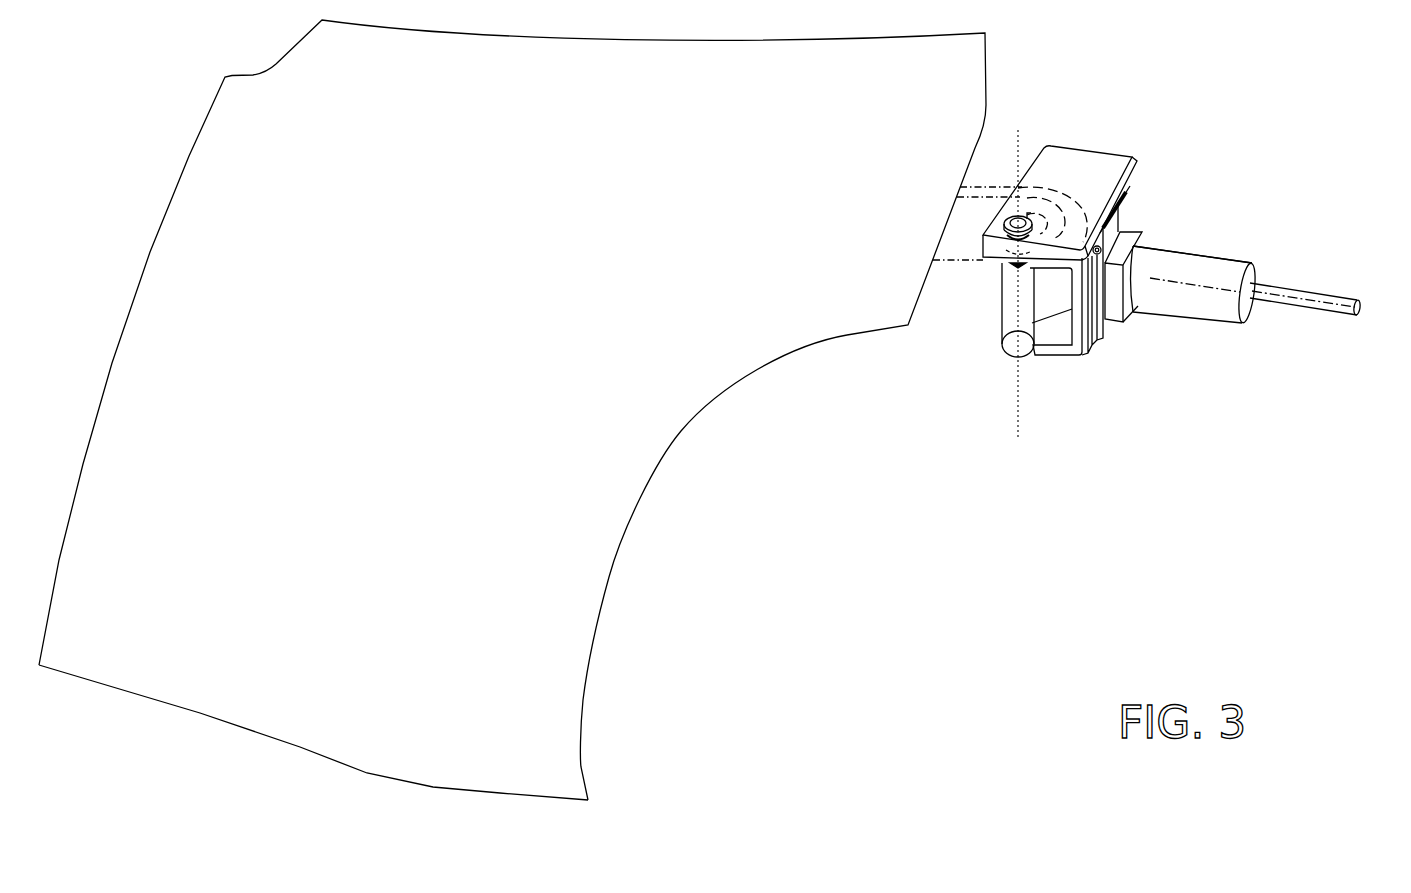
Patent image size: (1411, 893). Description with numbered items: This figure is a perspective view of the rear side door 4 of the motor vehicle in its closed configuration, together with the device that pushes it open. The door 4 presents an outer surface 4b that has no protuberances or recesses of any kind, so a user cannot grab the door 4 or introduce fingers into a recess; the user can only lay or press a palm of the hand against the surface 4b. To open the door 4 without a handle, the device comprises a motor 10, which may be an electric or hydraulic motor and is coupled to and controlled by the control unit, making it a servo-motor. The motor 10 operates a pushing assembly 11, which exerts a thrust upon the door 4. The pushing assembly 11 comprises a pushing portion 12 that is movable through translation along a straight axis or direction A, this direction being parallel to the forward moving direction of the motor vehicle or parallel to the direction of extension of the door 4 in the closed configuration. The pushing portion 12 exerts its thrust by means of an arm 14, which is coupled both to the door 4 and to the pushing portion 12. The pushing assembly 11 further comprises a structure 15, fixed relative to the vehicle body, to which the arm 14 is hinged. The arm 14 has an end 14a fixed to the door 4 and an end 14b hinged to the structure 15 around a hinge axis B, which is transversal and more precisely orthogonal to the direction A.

The rear side door 4 is at (625, 382).
The outer surface 4b is at (528, 422).
The motor 10 is at (1172, 262).
The pushing assembly 11 is at (1210, 245).
The pushing portion 12 is at (1317, 312).
The arm 14 is at (1017, 242).
The end of the arm fixed to the door 14a is at (957, 242).
The end of the arm hinged to the structure 14b is at (1038, 300).
The structure 15 is at (1098, 172).
The straight axis or direction A is at (1370, 312).
The hinge axis B is at (1018, 385).